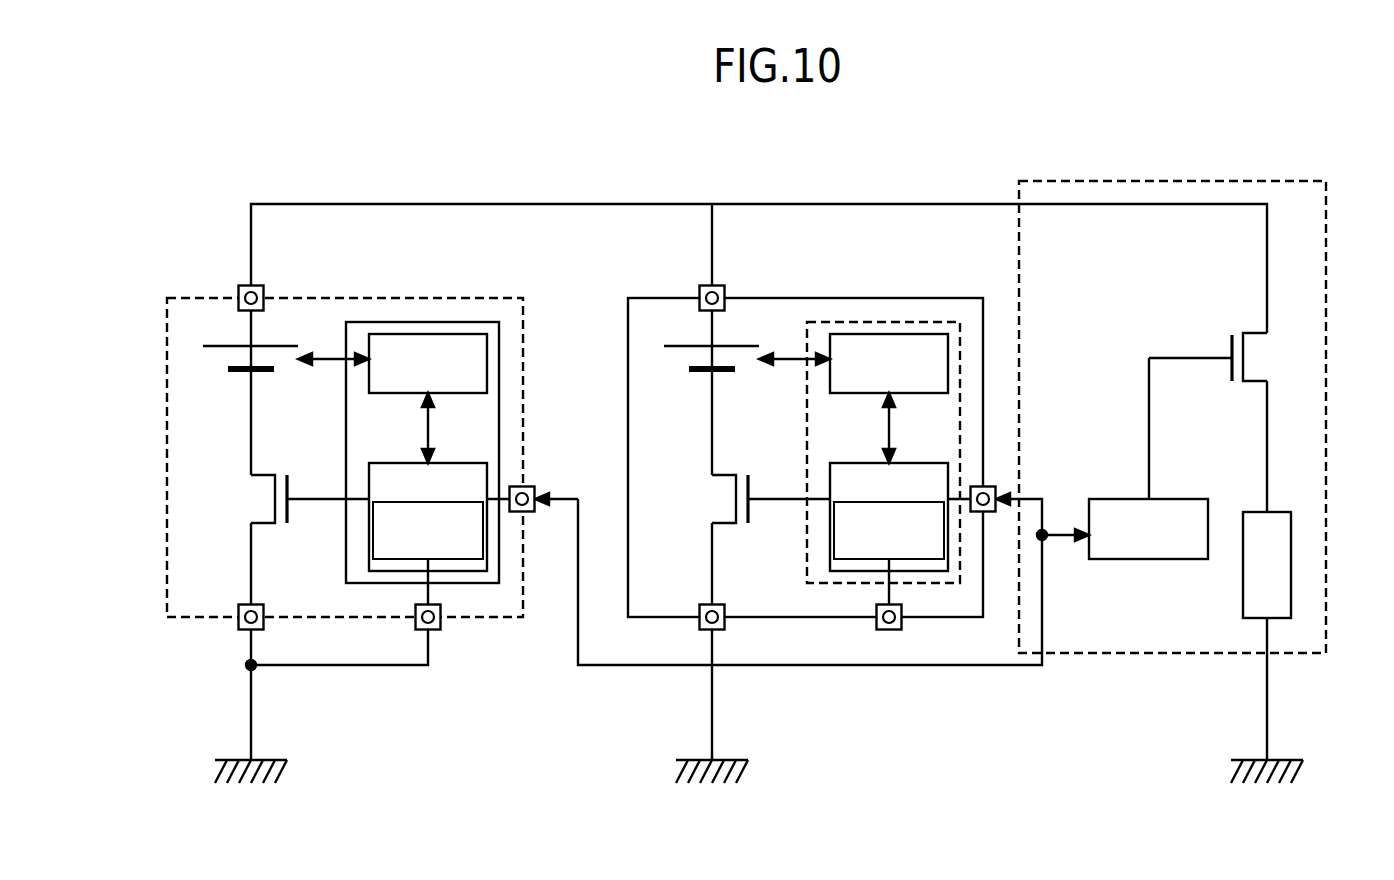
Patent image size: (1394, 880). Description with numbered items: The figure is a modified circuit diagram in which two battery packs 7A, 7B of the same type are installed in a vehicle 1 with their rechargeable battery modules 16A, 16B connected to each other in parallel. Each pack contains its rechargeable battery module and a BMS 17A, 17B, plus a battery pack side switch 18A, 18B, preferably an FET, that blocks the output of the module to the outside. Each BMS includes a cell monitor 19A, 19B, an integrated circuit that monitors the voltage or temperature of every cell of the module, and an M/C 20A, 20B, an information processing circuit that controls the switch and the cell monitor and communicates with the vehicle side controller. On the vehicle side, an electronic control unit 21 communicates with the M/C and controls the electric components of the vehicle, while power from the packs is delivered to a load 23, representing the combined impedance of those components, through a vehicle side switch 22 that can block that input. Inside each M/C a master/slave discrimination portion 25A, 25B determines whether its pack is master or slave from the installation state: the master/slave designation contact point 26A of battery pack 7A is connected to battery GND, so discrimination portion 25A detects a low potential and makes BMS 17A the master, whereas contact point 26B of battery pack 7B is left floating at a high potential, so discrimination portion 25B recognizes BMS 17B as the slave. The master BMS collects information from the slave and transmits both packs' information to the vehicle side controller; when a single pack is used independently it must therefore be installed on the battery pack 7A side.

The vehicle 1 is at (1330, 458).
The battery pack 7A is at (167, 597).
The battery pack 7B is at (628, 445).
The rechargeable battery module 16A is at (237, 375).
The rechargeable battery module 16B is at (698, 375).
The BMS 17A is at (346, 420).
The BMS 17B is at (807, 445).
The battery pack side switch 18A is at (265, 497).
The battery pack side switch 18B is at (726, 501).
The cell monitor (C/M) 19A is at (407, 395).
The cell monitor (C/M) 19B is at (868, 395).
The M/C 20A is at (452, 463).
The M/C 20B is at (913, 463).
The ECU 21 is at (1123, 562).
The vehicle side switch 22 is at (1240, 330).
The load 23 is at (1243, 604).
The master/slave discrimination portion 25A is at (453, 560).
The master/slave discrimination portion 25B is at (914, 560).
The master/slave designation contact point 26A is at (437, 630).
The master/slave designation contact point 26B is at (898, 630).